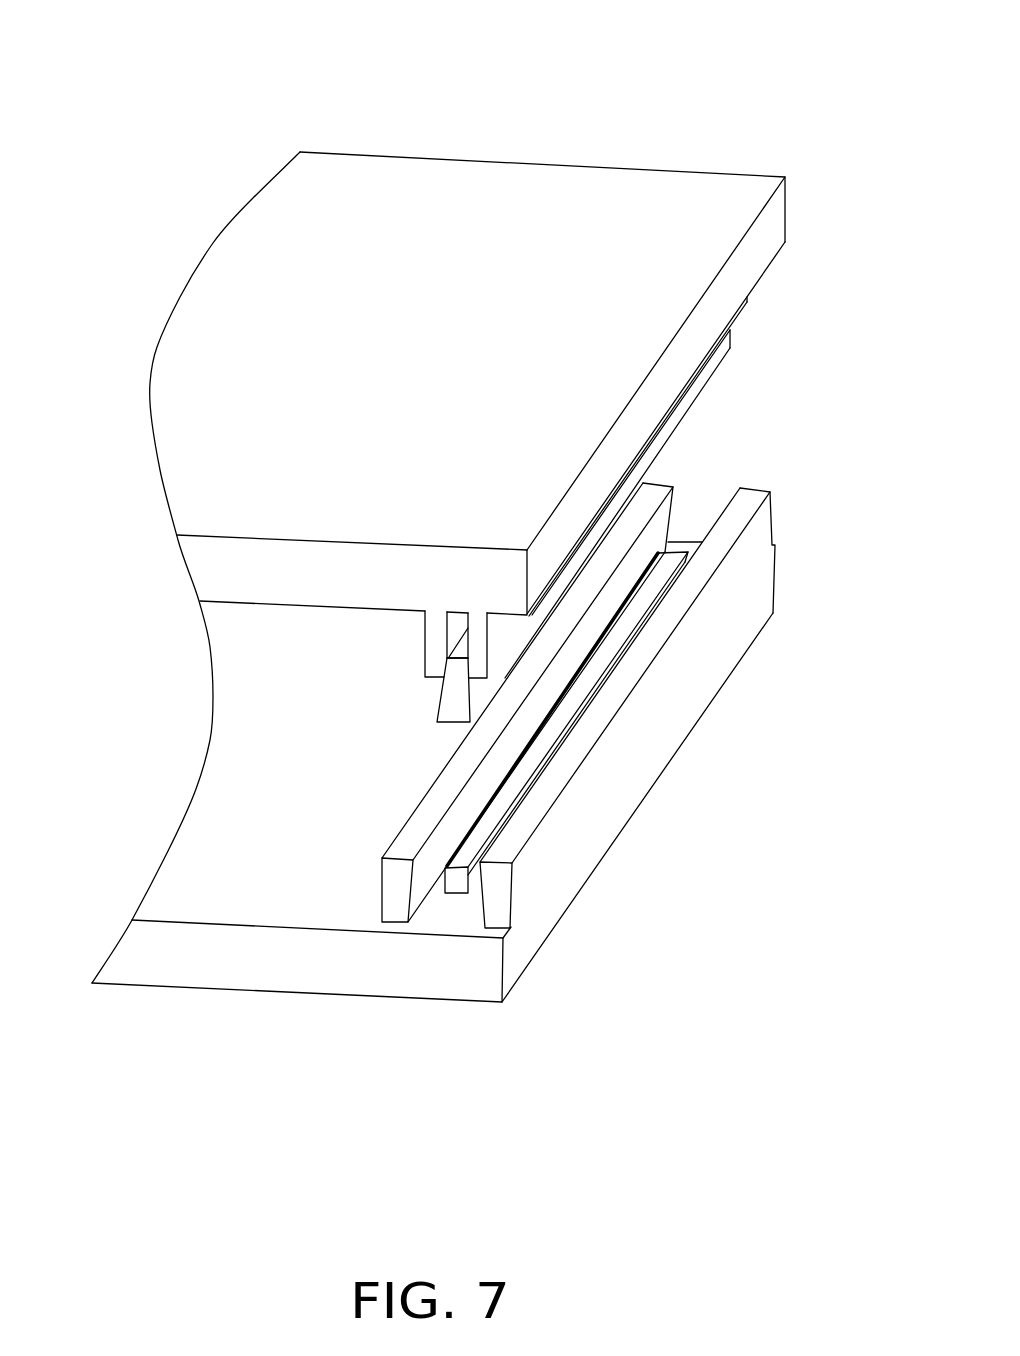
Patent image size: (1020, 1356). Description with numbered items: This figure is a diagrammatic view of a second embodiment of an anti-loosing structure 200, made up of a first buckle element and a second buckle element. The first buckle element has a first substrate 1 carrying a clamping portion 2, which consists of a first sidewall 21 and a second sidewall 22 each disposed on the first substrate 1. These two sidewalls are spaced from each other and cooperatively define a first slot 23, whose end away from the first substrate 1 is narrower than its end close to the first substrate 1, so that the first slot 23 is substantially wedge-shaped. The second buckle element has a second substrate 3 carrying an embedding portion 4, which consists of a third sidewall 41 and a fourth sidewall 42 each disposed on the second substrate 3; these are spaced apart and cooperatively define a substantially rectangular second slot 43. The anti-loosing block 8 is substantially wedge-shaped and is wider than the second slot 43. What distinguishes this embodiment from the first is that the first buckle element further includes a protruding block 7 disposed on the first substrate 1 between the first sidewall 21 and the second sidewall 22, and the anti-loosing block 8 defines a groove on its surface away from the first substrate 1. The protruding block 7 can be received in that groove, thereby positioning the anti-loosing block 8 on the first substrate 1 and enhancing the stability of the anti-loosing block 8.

The anti-loosing structure 200 is at (510, 28).
The first substrate 1 is at (430, 983).
The clamping portion 2 is at (862, 573).
The first sidewall 21 is at (590, 588).
The second sidewall 22 is at (657, 633).
The first slot 23 is at (683, 517).
The second substrate 3 is at (372, 560).
The embedding portion 4 is at (106, 567).
The third sidewall 41 is at (440, 628).
The fourth sidewall 42 is at (478, 660).
The second slot 43 is at (448, 640).
The protruding block 7 is at (468, 852).
The anti-loosing block 8 is at (452, 697).